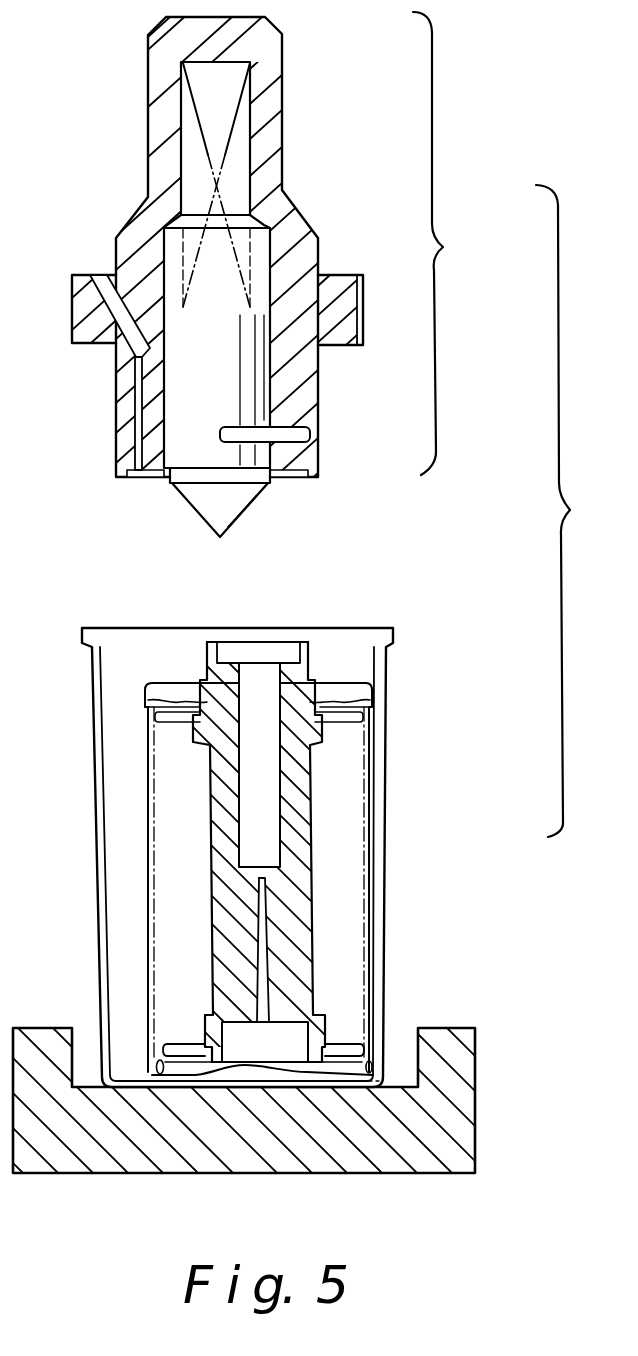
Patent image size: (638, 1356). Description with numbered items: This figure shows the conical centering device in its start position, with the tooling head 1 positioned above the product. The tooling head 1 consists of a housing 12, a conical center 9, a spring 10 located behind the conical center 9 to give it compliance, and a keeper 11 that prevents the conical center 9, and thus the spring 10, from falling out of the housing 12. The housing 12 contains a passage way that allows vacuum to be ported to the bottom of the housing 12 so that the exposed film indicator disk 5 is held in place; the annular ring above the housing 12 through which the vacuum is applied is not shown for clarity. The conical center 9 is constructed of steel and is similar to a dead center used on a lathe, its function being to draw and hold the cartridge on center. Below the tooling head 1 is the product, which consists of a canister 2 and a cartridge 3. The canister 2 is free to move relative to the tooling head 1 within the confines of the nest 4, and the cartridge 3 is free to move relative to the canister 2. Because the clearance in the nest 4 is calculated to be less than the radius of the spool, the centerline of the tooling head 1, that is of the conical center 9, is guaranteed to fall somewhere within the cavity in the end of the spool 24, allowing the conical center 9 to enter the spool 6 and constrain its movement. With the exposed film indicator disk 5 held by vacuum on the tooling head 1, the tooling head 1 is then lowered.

The tooling head 1 is at (446, 243).
The canister 2 is at (97, 888).
The cartridge 3 is at (148, 743).
The nest 4 is at (475, 1102).
The exposed film indicator disk 5 is at (139, 466).
The spool 6 is at (320, 917).
The conical center 9 is at (190, 508).
The spring 10 is at (183, 257).
The keeper 11 is at (306, 434).
The housing 12 is at (148, 125).
The cavity in the end of the spool 24 is at (283, 653).